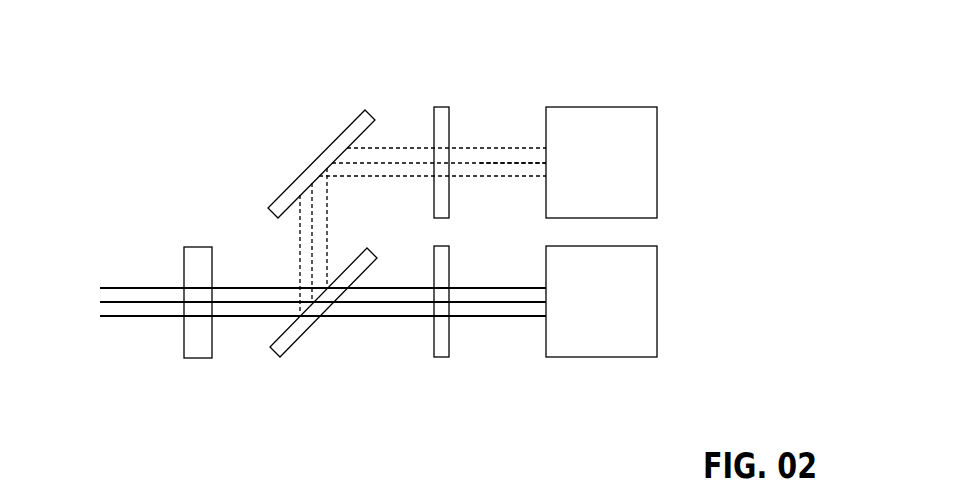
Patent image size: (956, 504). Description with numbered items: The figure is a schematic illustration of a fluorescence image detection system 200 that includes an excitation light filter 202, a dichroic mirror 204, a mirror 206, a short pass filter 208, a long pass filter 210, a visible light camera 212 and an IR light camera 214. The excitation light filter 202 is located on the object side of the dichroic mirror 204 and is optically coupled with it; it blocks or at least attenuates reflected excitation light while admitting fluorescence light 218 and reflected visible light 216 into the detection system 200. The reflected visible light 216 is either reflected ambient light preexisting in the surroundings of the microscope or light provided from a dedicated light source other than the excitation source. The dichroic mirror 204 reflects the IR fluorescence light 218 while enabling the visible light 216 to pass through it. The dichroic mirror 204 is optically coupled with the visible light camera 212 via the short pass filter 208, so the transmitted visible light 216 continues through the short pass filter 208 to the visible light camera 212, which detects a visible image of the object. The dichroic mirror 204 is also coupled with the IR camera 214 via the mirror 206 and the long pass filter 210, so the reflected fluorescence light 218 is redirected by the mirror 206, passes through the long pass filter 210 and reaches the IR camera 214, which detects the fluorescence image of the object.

The fluorescence image detection system 200 is at (219, 101).
The excitation light filter 202 is at (198, 358).
The dichroic mirror 204 is at (293, 345).
The mirror 206 is at (337, 133).
The short pass filter 208 is at (445, 358).
The long pass filter 210 is at (437, 107).
The visible light camera 212 is at (658, 300).
The IR light camera 214 is at (658, 162).
The reflected visible light 216 is at (494, 341).
The fluorescence light 218 is at (494, 121).